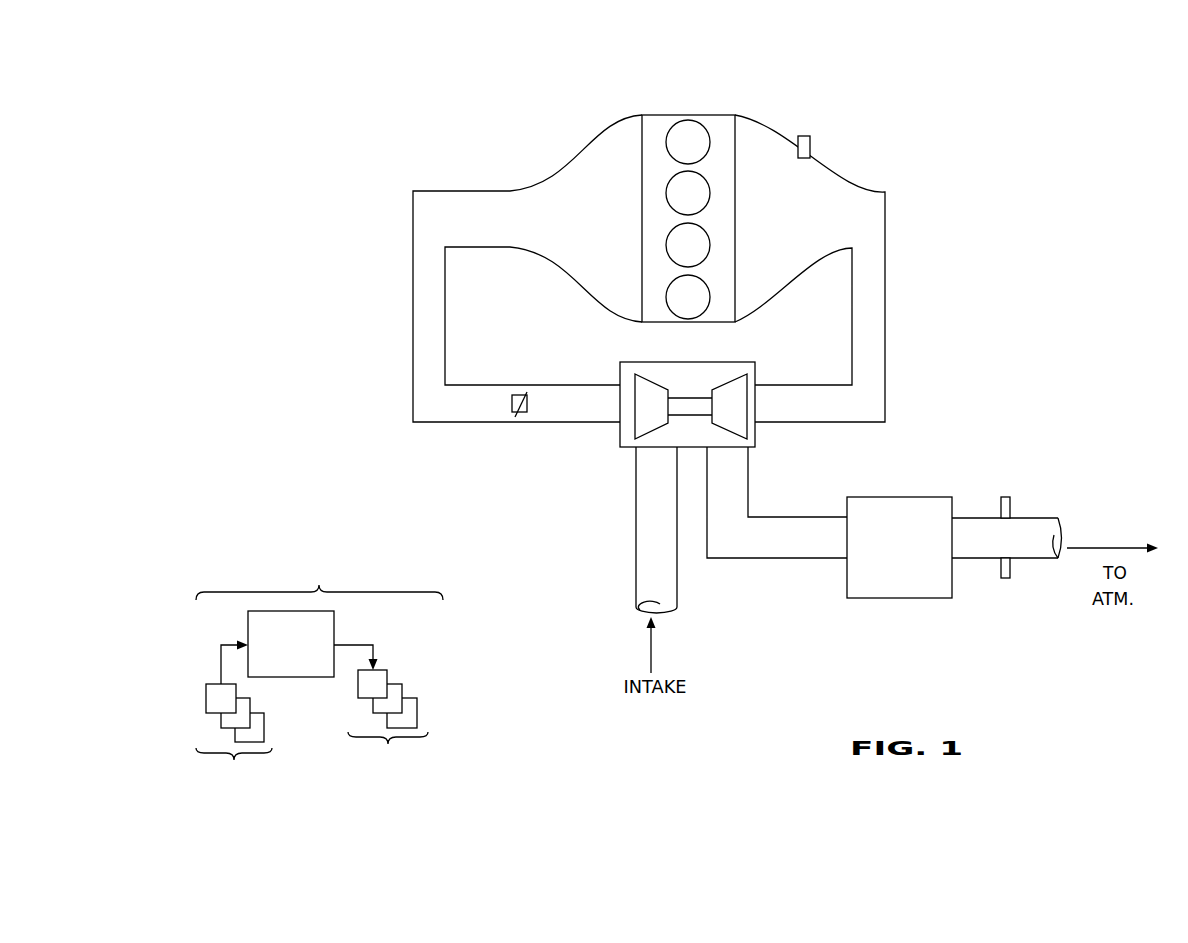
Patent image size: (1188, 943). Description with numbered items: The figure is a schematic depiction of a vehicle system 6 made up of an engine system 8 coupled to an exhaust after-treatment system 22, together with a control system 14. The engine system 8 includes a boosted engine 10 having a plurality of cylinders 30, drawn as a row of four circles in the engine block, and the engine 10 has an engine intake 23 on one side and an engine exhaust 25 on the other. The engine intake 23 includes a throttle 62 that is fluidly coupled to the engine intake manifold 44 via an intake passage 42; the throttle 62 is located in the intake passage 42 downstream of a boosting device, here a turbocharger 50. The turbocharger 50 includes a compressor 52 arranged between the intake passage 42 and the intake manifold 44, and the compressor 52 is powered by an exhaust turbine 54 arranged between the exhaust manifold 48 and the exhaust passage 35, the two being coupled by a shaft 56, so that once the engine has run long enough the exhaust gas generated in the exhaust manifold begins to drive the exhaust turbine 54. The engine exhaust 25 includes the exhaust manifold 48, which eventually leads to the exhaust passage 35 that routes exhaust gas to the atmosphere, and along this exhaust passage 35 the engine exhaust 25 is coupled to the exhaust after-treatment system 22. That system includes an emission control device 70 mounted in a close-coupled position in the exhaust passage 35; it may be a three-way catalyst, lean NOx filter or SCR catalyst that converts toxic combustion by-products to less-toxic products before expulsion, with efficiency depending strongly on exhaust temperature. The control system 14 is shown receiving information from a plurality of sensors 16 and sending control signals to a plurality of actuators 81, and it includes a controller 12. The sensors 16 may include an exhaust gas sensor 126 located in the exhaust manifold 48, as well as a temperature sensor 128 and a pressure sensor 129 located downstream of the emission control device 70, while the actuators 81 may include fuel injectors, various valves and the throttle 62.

The vehicle system 6 is at (258, 106).
The engine system 8 is at (789, 90).
The boosted engine 10 is at (735, 200).
The cylinders 30 is at (710, 140).
The intake manifold 44 is at (607, 228).
The exhaust manifold 48 is at (814, 228).
The exhaust gas sensor 126 is at (810, 150).
The engine exhaust 25 is at (913, 319).
The turbocharger 50 is at (683, 362).
The compressor 52 is at (633, 392).
The exhaust turbine 54 is at (747, 392).
The shaft 56 is at (707, 416).
The throttle 62 is at (527, 403).
The intake passage 42 is at (636, 555).
The engine intake 23 is at (564, 517).
The exhaust after-treatment system 22 is at (954, 434).
The emission control device 70 is at (880, 497).
The exhaust passage 35 is at (1020, 518).
The pressure sensor 129 is at (1005, 497).
The temperature sensor 128 is at (1010, 568).
The control system 14 is at (319, 569).
The controller 12 is at (291, 644).
The sensors 16 is at (234, 722).
The actuators 81 is at (381, 715).